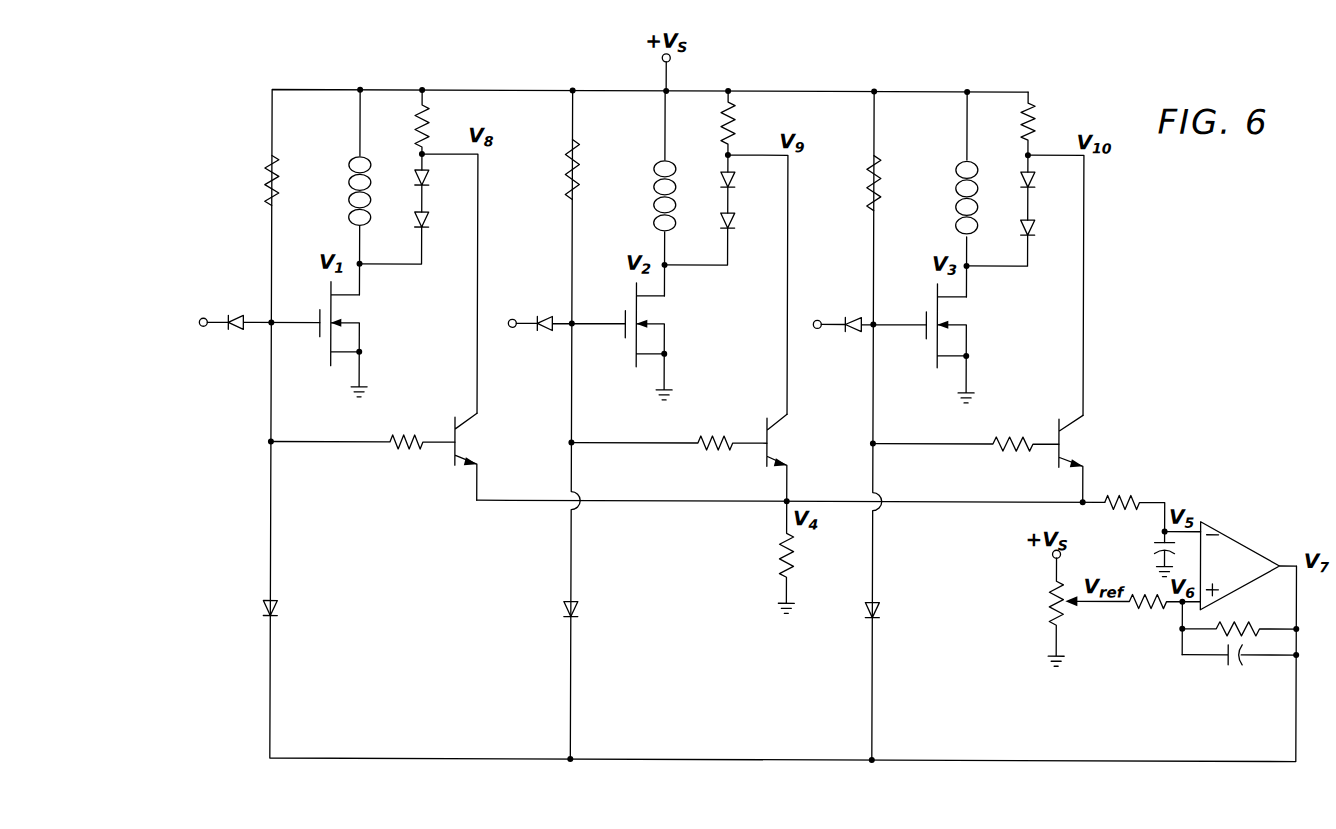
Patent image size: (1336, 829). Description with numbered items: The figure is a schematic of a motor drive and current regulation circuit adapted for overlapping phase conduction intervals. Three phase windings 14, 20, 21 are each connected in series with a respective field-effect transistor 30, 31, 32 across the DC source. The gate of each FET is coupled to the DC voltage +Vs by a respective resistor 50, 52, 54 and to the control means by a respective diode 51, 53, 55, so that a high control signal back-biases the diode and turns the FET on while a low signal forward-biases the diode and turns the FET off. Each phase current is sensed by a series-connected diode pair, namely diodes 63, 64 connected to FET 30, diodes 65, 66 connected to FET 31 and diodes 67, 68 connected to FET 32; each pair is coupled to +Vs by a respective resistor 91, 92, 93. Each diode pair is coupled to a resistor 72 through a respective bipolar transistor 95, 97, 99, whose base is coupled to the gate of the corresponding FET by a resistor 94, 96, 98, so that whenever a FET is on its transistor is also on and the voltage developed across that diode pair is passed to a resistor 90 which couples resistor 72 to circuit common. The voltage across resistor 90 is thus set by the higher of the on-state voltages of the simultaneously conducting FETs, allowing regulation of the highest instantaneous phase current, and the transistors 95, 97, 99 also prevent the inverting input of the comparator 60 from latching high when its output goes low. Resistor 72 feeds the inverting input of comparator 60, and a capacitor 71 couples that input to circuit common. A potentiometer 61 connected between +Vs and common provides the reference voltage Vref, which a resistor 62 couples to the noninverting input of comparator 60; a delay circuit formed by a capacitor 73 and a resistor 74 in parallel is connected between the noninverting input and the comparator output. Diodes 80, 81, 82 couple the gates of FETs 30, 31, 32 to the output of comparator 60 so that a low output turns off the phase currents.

The phase winding 14 is at (347, 159).
The phase winding 20 is at (656, 168).
The phase winding 21 is at (958, 168).
The field-effect transistor 30 is at (359, 353).
The field-effect transistor 31 is at (667, 343).
The field-effect transistor 32 is at (966, 350).
The resistor 50 is at (268, 175).
The diode 51 is at (242, 317).
The resistor 52 is at (565, 189).
The diode 53 is at (546, 314).
The resistor 54 is at (871, 189).
The diode 55 is at (853, 314).
The comparator 60 is at (1234, 546).
The potentiometer 61 is at (1054, 593).
The resistor 62 is at (1142, 604).
The diode 63 is at (418, 229).
The diode 64 is at (419, 172).
The diode 65 is at (718, 232).
The diode 66 is at (718, 172).
The diode 67 is at (1018, 234).
The diode 68 is at (1023, 172).
The capacitor 71 is at (1153, 544).
The resistor 72 is at (1141, 498).
The capacitor 73 is at (1234, 662).
The resistor 74 is at (1242, 625).
The diode 80 is at (268, 602).
The diode 81 is at (565, 602).
The diode 82 is at (880, 602).
The resistor 90 is at (779, 538).
The resistor 91 is at (429, 126).
The resistor 92 is at (739, 126).
The resistor 93 is at (1032, 112).
The resistor 94 is at (392, 448).
The bipolar transistor 95 is at (456, 460).
The resistor 96 is at (698, 448).
The bipolar transistor 97 is at (768, 460).
The resistor 98 is at (1008, 448).
The bipolar transistor 99 is at (1066, 460).